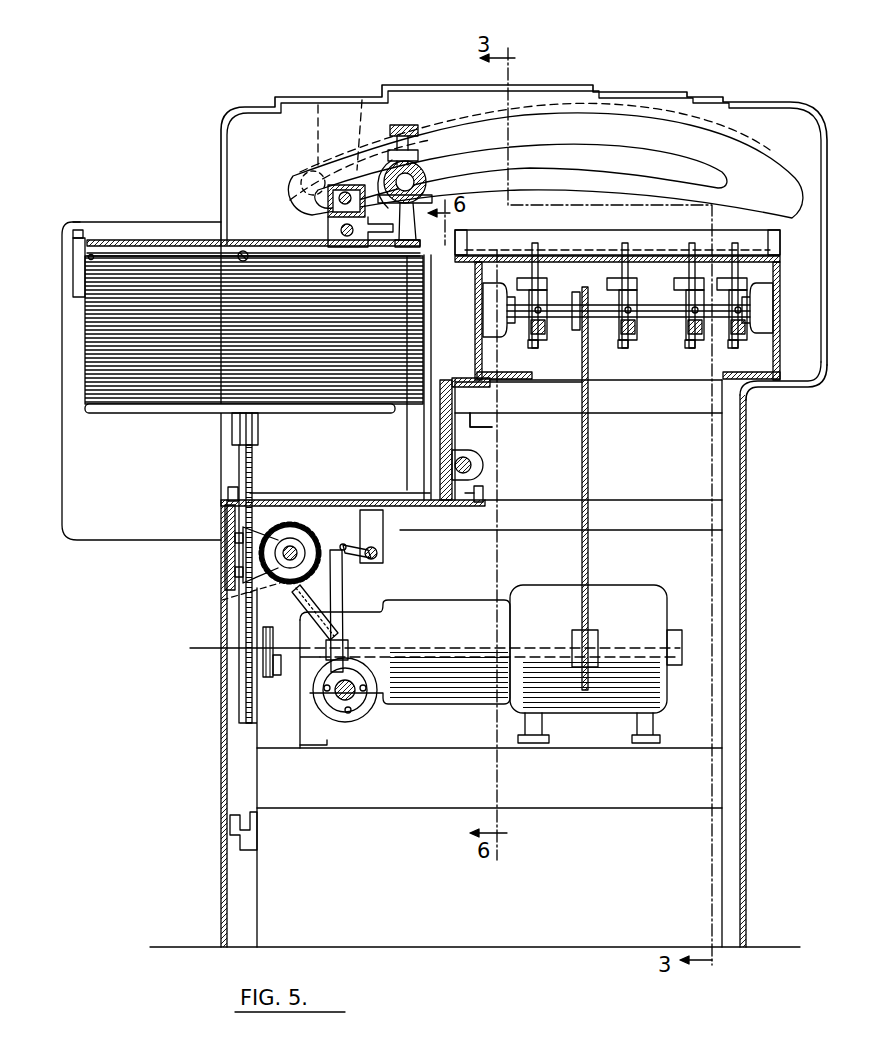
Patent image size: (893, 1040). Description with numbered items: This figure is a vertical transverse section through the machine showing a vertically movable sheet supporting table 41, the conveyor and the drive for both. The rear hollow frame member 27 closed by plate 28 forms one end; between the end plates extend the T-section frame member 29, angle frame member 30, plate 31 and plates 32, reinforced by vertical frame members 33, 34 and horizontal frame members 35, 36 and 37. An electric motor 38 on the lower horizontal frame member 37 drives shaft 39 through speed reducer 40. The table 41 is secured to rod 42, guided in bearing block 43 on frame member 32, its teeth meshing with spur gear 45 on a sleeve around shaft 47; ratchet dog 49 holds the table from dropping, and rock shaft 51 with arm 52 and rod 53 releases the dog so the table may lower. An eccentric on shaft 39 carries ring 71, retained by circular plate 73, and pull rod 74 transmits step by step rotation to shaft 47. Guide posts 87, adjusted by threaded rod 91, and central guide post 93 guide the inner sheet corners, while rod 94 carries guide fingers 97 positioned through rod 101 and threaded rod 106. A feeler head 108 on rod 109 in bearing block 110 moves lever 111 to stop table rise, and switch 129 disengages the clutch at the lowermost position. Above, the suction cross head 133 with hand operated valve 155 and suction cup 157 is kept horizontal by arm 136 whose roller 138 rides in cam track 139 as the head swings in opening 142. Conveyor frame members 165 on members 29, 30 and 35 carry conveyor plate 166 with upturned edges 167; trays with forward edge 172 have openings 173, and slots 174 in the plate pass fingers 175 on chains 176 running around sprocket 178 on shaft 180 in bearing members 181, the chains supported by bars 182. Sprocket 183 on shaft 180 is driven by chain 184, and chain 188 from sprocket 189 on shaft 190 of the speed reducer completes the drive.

The hollow frame member 27 is at (318, 92).
The plate 28 is at (270, 163).
The T-section frame member 29 is at (755, 392).
The angle frame member 30 is at (478, 386).
The plate 31 is at (470, 432).
The plates 32 is at (225, 555).
The vertical frame member 33 is at (736, 628).
The vertical frame member 34 is at (243, 760).
The horizontal frame member 35 is at (643, 398).
The horizontal frame member 36 is at (622, 512).
The horizontal frame member 37 is at (538, 790).
The electric motor 38 is at (640, 594).
The shaft 39 is at (353, 693).
The speed reducer 40 is at (447, 613).
The sheet supporting table 41 is at (167, 408).
The rod 42 is at (243, 462).
The bearing block 43 is at (258, 542).
The spur gear 45 is at (293, 522).
The shaft 47 is at (284, 553).
The ratchet dog 49 is at (222, 600).
The rock shaft 51 is at (380, 554).
The arm 52 is at (365, 548).
The rod 53 is at (338, 565).
The ring 71 is at (360, 722).
The circular plate 73 is at (344, 714).
The pull rod 74 is at (330, 604).
The guide post 87 is at (417, 438).
The rod 91 is at (472, 465).
The vertical central guide post 93 is at (427, 335).
The rod 94 is at (112, 240).
The guide finger 97 is at (75, 285).
The rod 101 is at (338, 231).
The rod 106 is at (335, 198).
The feeler head 108 is at (243, 251).
The rod 109 is at (317, 495).
The bearing block 110 is at (228, 493).
The lever 111 is at (483, 494).
The switch 129 is at (258, 840).
The suction cross head 133 is at (427, 181).
The arm 136 is at (360, 150).
The roller 138 is at (535, 149).
The cam track 139 is at (647, 140).
The opening 142 is at (743, 152).
The hand operated valve 155 is at (412, 150).
The suction cup 157 is at (426, 227).
The conveyor frame member 165 is at (480, 316).
The conveyor plate 166 is at (620, 262).
The upturned edge 167 is at (460, 238).
The forward edge 172 is at (617, 245).
The opening 173 is at (538, 250).
The longitudinal slot 174 is at (540, 282).
The finger 175 is at (695, 245).
The chain 176 is at (735, 348).
The sprocket 178 is at (532, 330).
The shaft 180 is at (647, 310).
The bearing member 181 is at (495, 298).
The bar 182 is at (547, 283).
The sprocket 183 is at (577, 333).
The chain 184 is at (590, 446).
The chain 188 is at (268, 628).
The sprocket 189 is at (277, 680).
The shaft 190 is at (327, 633).